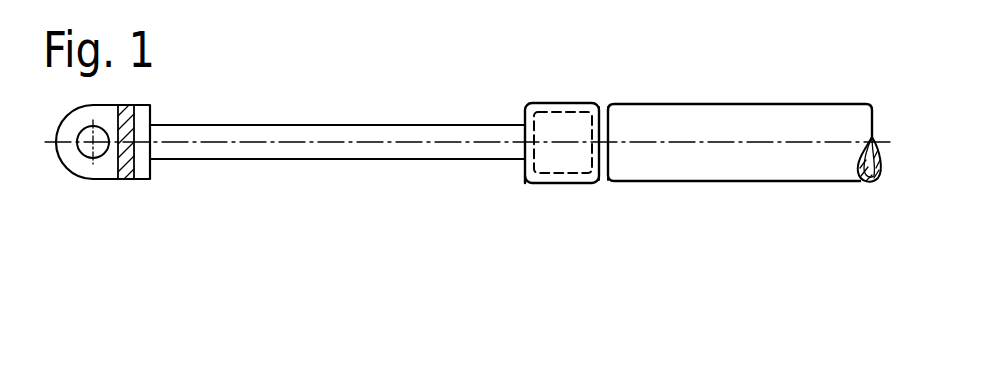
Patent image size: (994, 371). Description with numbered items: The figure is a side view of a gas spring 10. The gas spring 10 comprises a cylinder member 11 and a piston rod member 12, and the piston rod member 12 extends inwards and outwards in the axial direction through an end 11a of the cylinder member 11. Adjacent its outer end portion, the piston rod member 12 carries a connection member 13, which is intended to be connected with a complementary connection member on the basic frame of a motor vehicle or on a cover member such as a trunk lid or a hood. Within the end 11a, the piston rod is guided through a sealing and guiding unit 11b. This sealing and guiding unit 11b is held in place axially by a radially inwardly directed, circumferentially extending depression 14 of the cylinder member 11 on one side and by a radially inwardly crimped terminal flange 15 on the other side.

The gas spring 10 is at (365, 105).
The cylinder member 11 is at (762, 104).
The end of the cylinder member 11a is at (523, 103).
The sealing and guiding unit 11b is at (565, 173).
The piston rod member 12 is at (260, 125).
The connection member 13 is at (102, 168).
The depression 14 is at (605, 105).
The terminal flange 15 is at (527, 183).